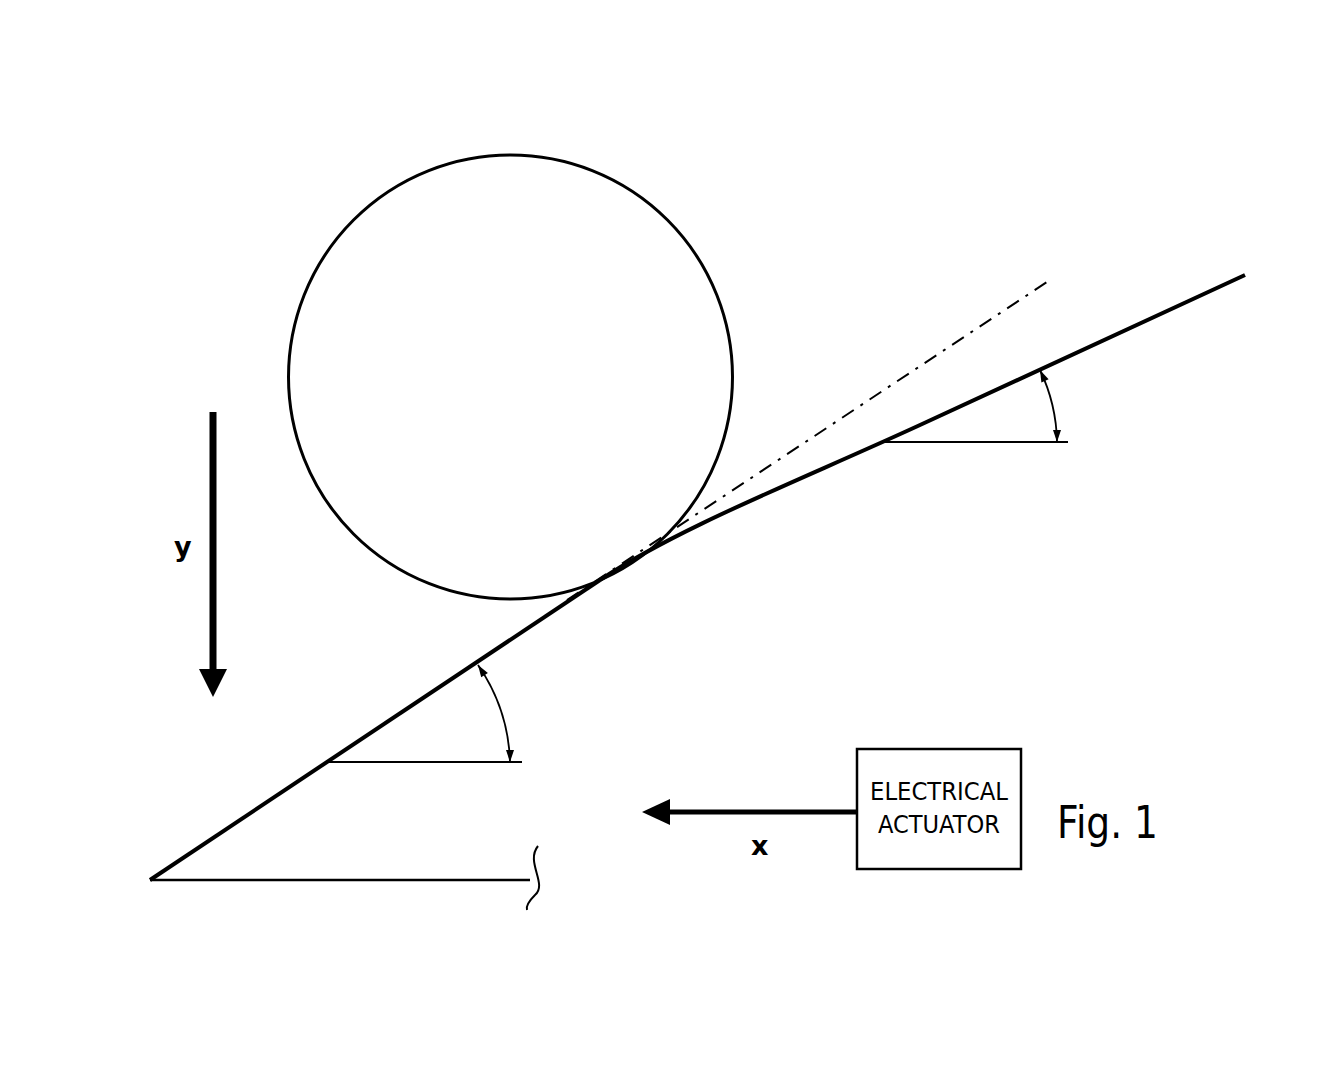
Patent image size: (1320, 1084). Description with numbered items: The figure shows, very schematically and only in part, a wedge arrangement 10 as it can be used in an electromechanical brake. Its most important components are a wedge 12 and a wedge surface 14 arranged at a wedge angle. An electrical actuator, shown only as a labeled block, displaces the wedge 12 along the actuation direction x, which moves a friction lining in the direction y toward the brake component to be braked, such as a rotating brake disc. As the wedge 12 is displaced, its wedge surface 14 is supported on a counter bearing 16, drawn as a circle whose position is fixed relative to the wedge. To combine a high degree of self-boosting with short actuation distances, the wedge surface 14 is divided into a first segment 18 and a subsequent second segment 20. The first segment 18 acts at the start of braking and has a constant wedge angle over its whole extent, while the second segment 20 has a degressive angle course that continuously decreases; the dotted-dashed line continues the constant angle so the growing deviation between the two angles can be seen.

The wedge arrangement 10 is at (882, 215).
The wedge 12 is at (410, 850).
The wedge surface 14 is at (457, 658).
The counter bearing 16 is at (510, 386).
The first segment 18 is at (425, 695).
The second segment 20 is at (993, 388).